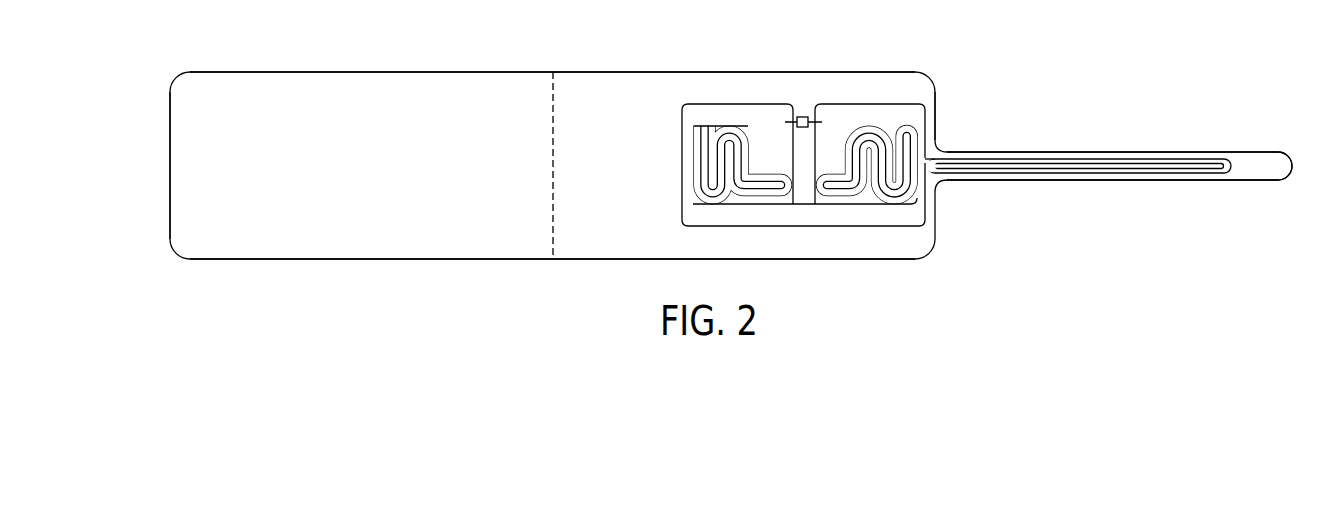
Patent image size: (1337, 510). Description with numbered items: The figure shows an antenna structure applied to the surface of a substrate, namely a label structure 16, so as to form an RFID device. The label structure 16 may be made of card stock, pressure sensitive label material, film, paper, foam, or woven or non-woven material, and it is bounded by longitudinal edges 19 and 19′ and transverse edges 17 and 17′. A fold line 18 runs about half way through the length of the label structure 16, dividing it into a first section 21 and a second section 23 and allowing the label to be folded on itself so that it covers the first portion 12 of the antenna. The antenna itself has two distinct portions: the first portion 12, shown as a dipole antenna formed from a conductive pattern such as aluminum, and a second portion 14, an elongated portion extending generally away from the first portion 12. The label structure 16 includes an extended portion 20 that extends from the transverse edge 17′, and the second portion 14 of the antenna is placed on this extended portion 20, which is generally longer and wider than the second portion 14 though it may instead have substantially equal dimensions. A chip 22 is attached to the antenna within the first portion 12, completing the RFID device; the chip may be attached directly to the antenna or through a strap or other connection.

The first section 12 is at (857, 226).
The second section 14 is at (1106, 153).
The label structure 16 is at (295, 222).
The transverse edge 17 is at (170, 160).
The transverse edge 17′ is at (935, 113).
The fold line 18 is at (553, 105).
The longitudinal edge 19 is at (658, 72).
The longitudinal edge 19′ is at (367, 259).
The extended portion 20 is at (1270, 168).
The first section 21 is at (377, 178).
The chip 22 is at (803, 116).
The second section 23 is at (621, 178).